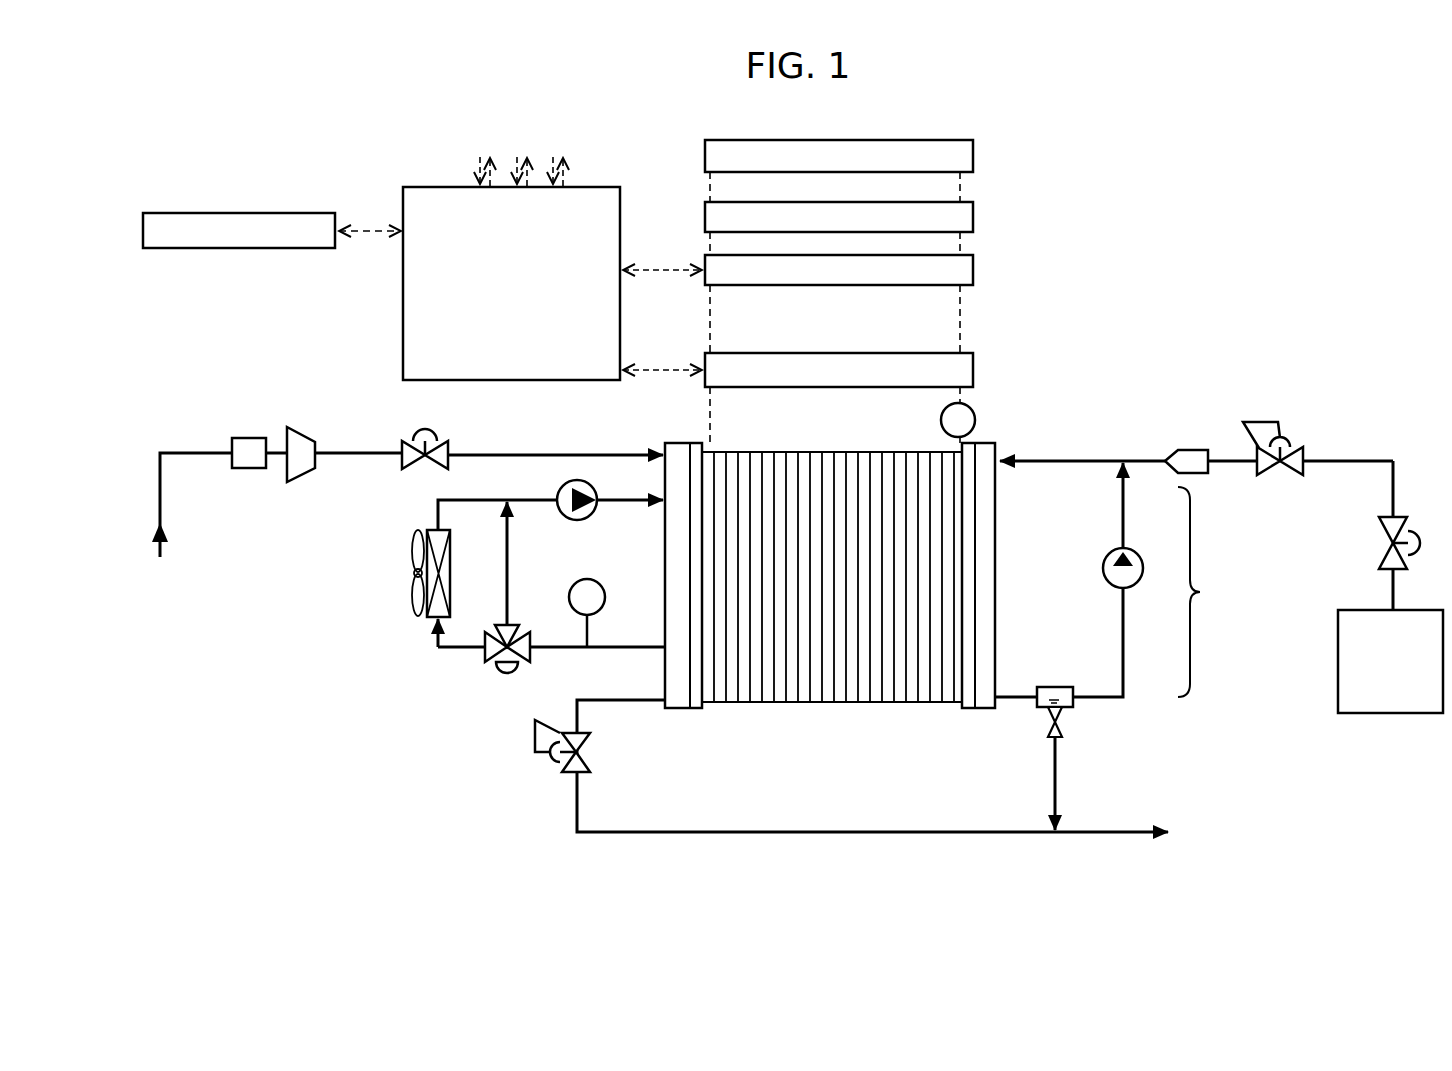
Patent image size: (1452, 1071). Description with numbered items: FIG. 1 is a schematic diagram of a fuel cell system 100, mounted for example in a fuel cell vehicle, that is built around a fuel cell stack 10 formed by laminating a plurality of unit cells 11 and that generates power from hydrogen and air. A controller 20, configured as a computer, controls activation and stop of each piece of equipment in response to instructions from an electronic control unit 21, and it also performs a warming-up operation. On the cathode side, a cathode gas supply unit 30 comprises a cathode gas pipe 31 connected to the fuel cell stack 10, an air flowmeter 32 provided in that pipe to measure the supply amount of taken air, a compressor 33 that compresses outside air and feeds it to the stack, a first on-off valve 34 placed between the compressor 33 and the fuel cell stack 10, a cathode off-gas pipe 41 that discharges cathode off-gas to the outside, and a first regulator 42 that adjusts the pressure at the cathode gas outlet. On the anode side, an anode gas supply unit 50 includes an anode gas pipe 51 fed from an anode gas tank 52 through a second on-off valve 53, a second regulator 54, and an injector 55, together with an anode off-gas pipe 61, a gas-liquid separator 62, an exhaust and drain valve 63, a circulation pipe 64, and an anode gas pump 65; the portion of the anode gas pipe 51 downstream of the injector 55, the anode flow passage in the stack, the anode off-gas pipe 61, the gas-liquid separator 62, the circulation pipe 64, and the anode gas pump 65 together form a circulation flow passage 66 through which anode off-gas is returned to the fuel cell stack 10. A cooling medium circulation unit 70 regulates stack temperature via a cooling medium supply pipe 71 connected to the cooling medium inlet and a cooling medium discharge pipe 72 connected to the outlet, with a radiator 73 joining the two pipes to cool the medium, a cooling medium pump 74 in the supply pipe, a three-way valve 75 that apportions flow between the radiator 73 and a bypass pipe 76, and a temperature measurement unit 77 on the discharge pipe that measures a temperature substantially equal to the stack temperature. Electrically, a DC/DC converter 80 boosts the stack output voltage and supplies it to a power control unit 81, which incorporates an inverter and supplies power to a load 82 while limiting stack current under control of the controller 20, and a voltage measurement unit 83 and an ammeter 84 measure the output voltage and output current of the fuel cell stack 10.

The fuel cell system 100 is at (1299, 227).
The fuel cell stack 10 is at (830, 609).
The unit cell 11 is at (825, 708).
The controller 20 is at (403, 195).
The electronic control unit 21 is at (143, 232).
The cathode gas supply unit 30 is at (200, 389).
The cathode gas pipe 31 is at (160, 490).
The air flowmeter 32 is at (254, 438).
The compressor 33 is at (300, 427).
The first on-off valve 34 is at (446, 443).
The cathode off-gas pipe 41 is at (785, 835).
The first regulator 42 is at (548, 758).
The anode gas supply unit 50 is at (1348, 762).
The anode gas pipe 51 is at (1393, 490).
The anode gas tank 52 is at (1413, 610).
The second on-off valve 53 is at (1381, 556).
The second regulator 54 is at (1303, 452).
The injector 55 is at (1194, 450).
The anode off-gas pipe 61 is at (1016, 700).
The gas-liquid separator 62 is at (1076, 712).
The exhaust and drain valve 63 is at (1062, 738).
The circulation pipe 64 is at (1121, 650).
The anode gas pump 65 is at (1102, 568).
The circulation flow passage 66 is at (1210, 592).
The cooling medium circulation unit 70 is at (430, 716).
The cooling medium supply pipe 71 is at (617, 507).
The cooling medium discharge pipe 72 is at (612, 650).
The radiator 73 is at (428, 532).
The cooling medium pump 74 is at (591, 518).
The three-way valve 75 is at (507, 675).
The bypass pipe 76 is at (508, 567).
The temperature measurement unit 77 is at (605, 597).
The DC/DC converter 80 is at (973, 268).
The power control unit 81 is at (973, 215).
The load 82 is at (973, 152).
The voltage measurement unit 83 is at (973, 370).
The ammeter 84 is at (976, 418).